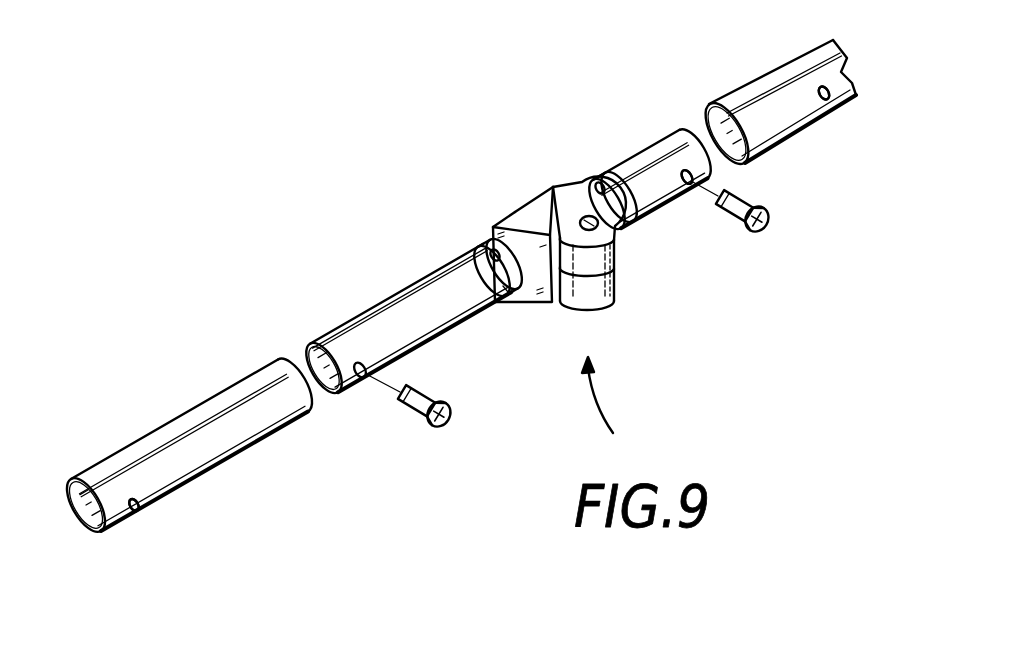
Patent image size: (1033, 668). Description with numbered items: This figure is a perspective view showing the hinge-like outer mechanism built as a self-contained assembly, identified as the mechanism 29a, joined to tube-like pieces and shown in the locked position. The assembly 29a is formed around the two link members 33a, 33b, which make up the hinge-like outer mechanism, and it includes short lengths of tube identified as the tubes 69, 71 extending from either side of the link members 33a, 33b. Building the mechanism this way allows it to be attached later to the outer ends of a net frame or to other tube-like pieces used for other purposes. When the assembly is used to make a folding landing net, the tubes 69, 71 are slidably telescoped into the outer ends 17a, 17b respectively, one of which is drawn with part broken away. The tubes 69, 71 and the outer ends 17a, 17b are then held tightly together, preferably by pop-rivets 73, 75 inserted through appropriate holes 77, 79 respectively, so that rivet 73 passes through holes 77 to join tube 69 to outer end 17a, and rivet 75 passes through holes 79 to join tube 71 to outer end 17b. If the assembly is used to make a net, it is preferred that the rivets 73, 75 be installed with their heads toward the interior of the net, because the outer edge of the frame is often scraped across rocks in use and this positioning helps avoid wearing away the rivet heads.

The outer end 17a is at (211, 410).
The outer end 17b is at (757, 88).
The tube 69 is at (428, 290).
The tube 71 is at (652, 155).
The pop-rivet 73 is at (452, 428).
The pop-rivet 75 is at (769, 228).
The holes 77 is at (140, 508).
The holes 79 is at (694, 178).
The link member 33a is at (612, 300).
The link member 33b is at (558, 204).
The mechanism assembly 29a is at (625, 411).